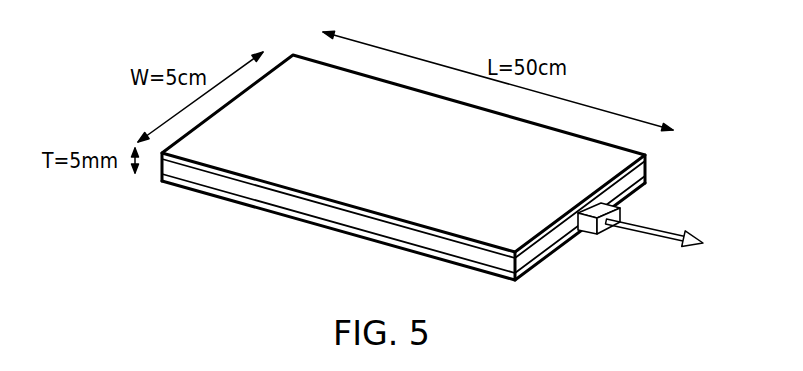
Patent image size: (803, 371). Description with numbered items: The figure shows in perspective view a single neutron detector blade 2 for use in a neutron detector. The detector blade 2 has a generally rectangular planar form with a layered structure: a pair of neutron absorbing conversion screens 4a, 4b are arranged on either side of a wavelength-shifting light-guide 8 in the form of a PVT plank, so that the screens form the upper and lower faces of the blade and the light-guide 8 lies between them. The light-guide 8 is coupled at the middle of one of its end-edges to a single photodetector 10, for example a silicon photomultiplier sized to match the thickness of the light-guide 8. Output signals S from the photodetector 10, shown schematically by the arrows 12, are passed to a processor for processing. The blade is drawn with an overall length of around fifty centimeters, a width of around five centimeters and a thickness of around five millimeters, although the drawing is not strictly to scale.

The neutron detector blade 2 is at (444, 182).
The neutron absorbing conversion screen 4a is at (647, 161).
The neutron absorbing conversion screen 4b is at (647, 186).
The wavelength-shifting light-guide 8 is at (486, 257).
The photodetector 10 is at (600, 234).
The arrows 12 is at (675, 242).